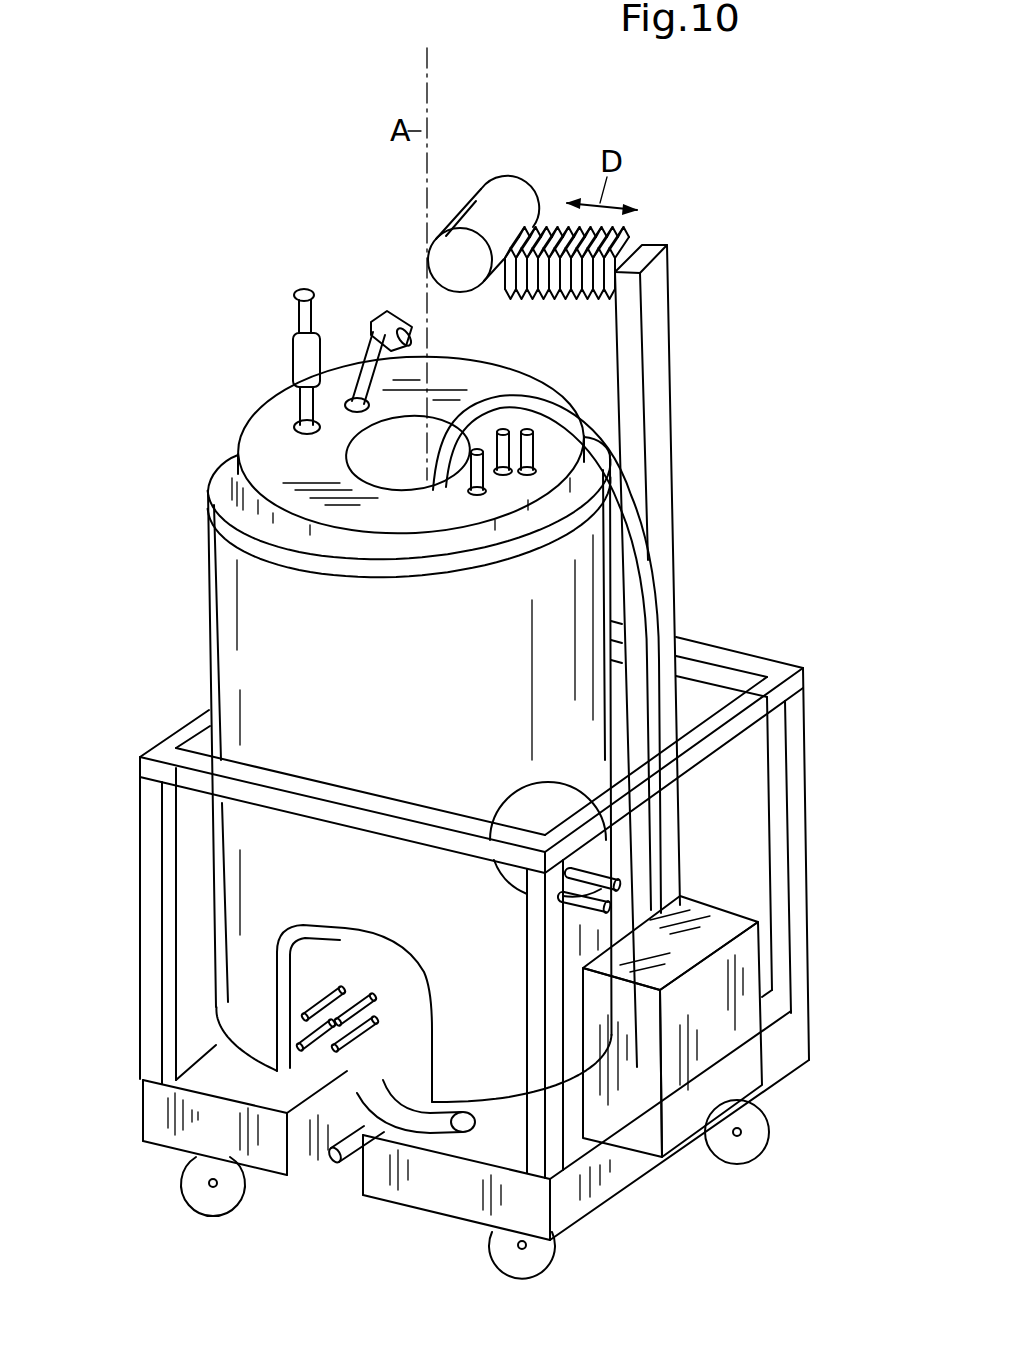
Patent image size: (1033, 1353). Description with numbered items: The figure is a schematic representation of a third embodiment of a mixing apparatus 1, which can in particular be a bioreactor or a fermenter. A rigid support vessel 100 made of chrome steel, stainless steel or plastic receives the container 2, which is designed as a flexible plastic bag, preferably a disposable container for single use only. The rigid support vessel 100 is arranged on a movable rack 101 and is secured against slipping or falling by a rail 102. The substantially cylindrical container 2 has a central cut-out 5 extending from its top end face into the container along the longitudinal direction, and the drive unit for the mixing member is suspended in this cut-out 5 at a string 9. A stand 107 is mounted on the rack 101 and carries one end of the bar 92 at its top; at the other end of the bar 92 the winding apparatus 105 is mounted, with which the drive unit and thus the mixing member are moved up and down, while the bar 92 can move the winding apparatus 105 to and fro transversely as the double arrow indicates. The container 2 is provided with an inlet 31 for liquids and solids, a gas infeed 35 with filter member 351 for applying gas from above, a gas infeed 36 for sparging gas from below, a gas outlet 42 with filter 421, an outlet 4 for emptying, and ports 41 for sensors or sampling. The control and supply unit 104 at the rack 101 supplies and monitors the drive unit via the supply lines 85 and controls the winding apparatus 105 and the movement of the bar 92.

The mixing apparatus 1 is at (130, 232).
The container 2 is at (265, 430).
The outlet 4 is at (342, 1160).
The central cut-out 5 is at (363, 460).
The string 9 is at (427, 330).
The inlet 31 is at (533, 452).
The gas infeed 35 is at (362, 364).
The gas infeed 36 is at (437, 1125).
The connections 41 is at (617, 877).
The gas outlet 42 is at (300, 405).
The supply lines 85 is at (658, 625).
The bar 92 is at (557, 300).
The rigid support vessel 100 is at (198, 597).
The movable rack 101 is at (148, 1134).
The rail 102 is at (130, 801).
The control and supply unit 104 is at (707, 1100).
The winding apparatus 105 is at (497, 196).
The stand 107 is at (658, 403).
The filter member 351 is at (381, 312).
The filter 421 is at (296, 358).